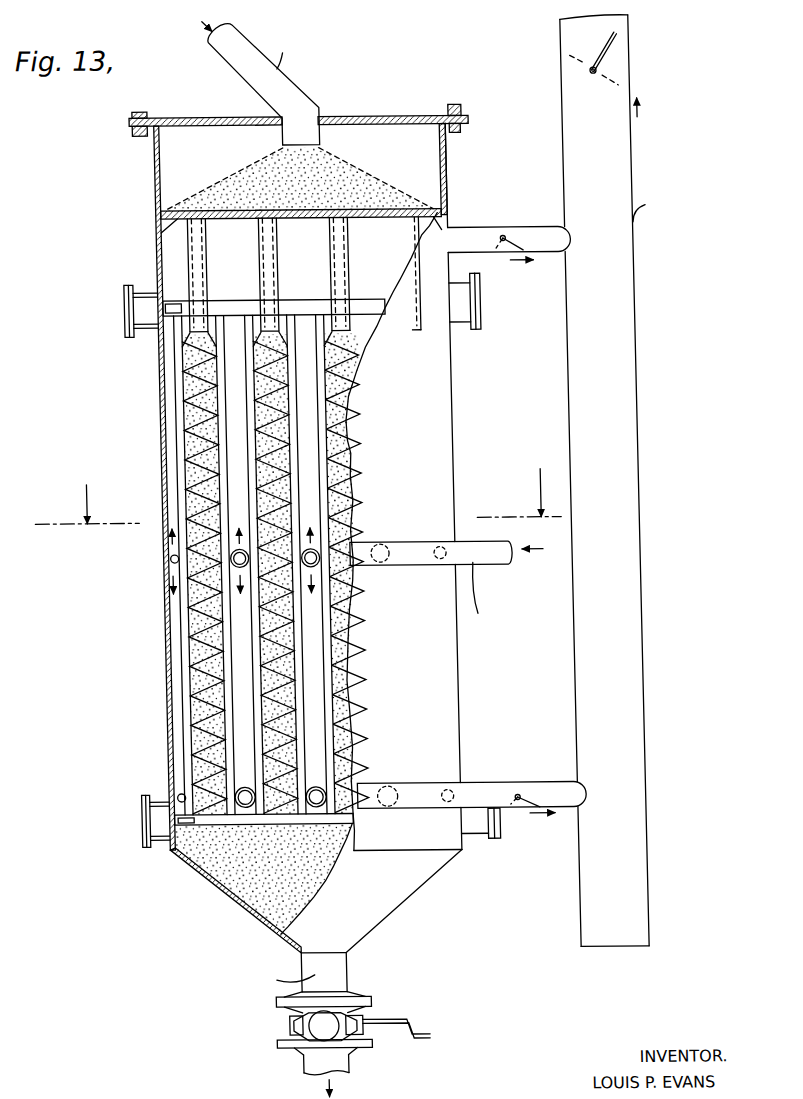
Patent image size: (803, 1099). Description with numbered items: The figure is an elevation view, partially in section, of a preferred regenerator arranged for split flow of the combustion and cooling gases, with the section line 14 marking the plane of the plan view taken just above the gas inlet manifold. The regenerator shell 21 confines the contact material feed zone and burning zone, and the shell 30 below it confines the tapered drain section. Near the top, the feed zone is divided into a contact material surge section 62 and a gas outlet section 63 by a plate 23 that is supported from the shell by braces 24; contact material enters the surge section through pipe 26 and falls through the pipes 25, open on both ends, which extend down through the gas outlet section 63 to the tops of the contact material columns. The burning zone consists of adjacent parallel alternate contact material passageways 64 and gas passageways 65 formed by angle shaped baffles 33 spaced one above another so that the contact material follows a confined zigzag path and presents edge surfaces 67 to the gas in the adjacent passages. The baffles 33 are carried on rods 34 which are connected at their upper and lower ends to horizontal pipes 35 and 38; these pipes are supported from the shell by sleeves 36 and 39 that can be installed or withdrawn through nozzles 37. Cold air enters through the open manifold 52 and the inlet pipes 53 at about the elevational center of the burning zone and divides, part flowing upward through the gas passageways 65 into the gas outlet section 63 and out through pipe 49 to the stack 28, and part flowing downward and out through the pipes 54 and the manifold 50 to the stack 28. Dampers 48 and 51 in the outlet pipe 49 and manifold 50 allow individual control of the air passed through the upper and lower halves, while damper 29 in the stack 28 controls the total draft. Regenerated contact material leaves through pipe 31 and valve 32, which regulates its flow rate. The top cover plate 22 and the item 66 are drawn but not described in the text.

The section line 14- 14 is at (297, 497).
The regenerator shell 21 is at (166, 172).
The top cover plate 22 is at (230, 116).
The plate 23 is at (302, 222).
The braces 24 is at (167, 228).
The pipes 25 is at (265, 266).
The pipe 26 is at (298, 89).
The stack 28 is at (640, 347).
The damper 29 is at (619, 74).
The shell 30 is at (251, 921).
The pipe 31 is at (338, 972).
The valve 32 is at (286, 1022).
The angle shaped baffles 33 is at (183, 398).
The rods 34 is at (181, 638).
The horizontal pipe 35 is at (254, 289).
The sleeve 36 is at (132, 310).
The nozzles 37 is at (148, 288).
The horizontal pipe 38 is at (219, 823).
The sleeve 39 is at (166, 820).
The damper 48 is at (510, 239).
The gas outlet pipe 49 is at (469, 234).
The manifold 50 is at (543, 783).
The damper 51 is at (512, 798).
The open manifold 52 is at (497, 564).
The inlet pipes 53 is at (232, 562).
The pipes 54 is at (174, 793).
The contact material surge section 62 is at (181, 145).
The gas outlet section 63 is at (184, 243).
The contact material passageways 64 is at (194, 358).
The gas passageways 65 is at (237, 653).
The solids in tubes 66 is at (201, 486).
The edge surfaces 67 is at (196, 716).